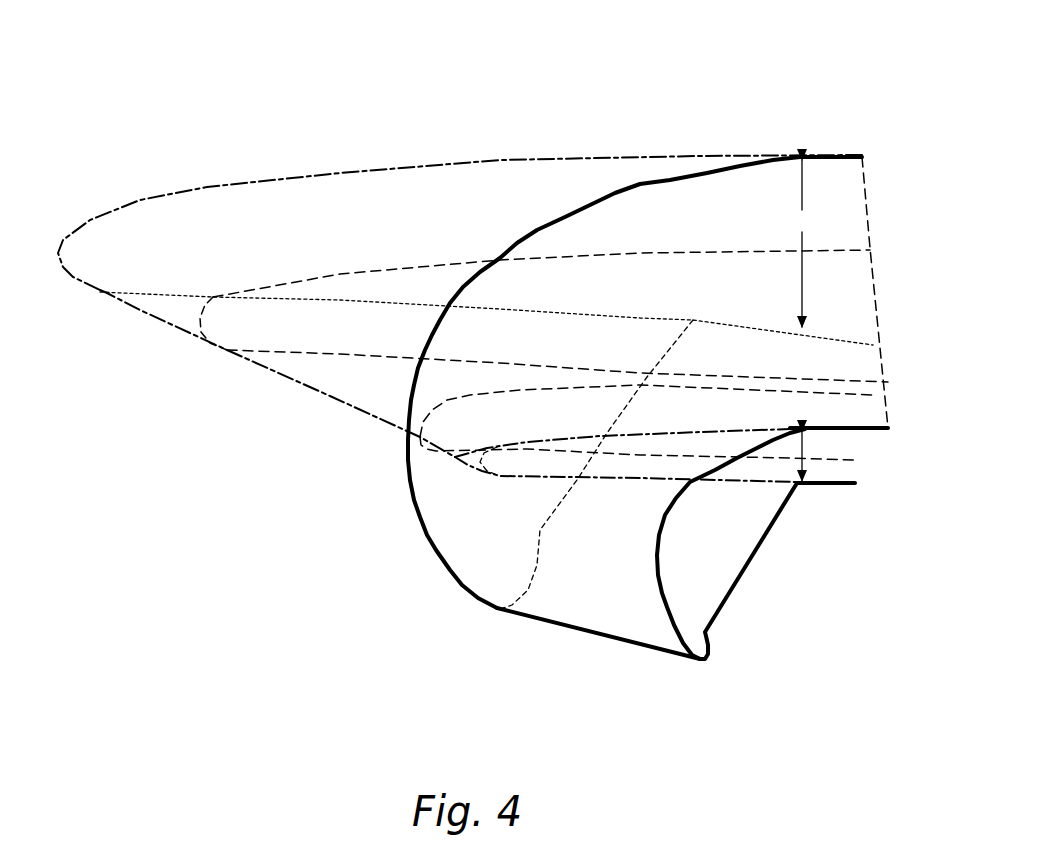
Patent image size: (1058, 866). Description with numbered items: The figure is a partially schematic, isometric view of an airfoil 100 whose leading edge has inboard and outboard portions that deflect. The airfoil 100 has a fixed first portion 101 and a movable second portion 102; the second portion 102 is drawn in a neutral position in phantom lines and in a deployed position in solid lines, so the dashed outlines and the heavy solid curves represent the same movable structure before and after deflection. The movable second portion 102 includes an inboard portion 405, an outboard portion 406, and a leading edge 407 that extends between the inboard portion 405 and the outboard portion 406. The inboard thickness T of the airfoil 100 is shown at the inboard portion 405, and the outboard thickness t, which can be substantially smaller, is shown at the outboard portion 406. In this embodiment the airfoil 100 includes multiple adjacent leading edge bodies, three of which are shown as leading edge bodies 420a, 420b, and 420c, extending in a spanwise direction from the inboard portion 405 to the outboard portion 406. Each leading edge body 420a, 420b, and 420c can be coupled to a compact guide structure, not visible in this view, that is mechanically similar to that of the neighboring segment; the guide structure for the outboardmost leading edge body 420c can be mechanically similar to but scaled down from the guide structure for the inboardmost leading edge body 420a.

The airfoil 100 is at (668, 72).
The fixed first portion 101 is at (840, 145).
The movable second portion 102 is at (203, 185).
The inboard portion 405 is at (538, 228).
The outboard portion 406 is at (680, 437).
The leading edge 407 is at (590, 633).
The leading edge body 420a is at (155, 312).
The leading edge body 420b is at (330, 394).
The leading edge body 420c is at (455, 458).